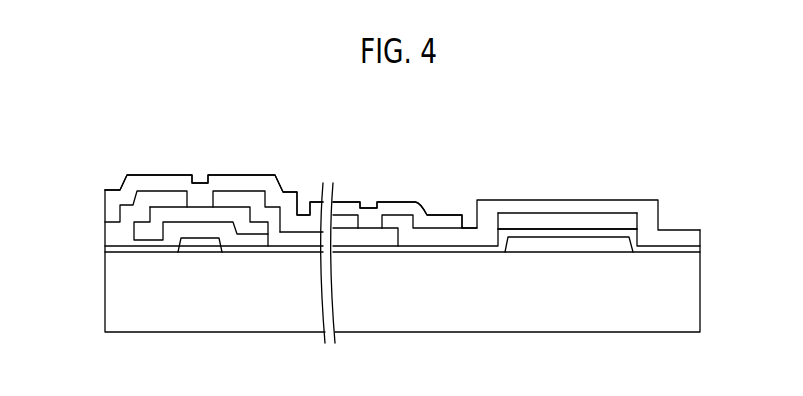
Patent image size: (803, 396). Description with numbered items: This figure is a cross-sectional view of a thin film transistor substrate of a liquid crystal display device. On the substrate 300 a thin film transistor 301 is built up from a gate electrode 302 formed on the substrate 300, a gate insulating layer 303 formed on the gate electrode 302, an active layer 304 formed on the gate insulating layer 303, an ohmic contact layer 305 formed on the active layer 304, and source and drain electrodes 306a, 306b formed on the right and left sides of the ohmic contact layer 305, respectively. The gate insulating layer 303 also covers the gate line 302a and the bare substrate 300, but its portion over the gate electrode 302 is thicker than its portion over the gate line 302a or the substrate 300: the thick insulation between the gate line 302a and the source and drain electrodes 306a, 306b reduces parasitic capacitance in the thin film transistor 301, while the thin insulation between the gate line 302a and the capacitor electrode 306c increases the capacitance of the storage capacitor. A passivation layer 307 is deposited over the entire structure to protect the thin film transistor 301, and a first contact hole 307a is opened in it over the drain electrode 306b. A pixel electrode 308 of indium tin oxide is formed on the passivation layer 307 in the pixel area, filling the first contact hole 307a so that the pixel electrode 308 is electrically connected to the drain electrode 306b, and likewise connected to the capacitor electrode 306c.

The substrate 300 is at (112, 288).
The thin film transistor 301 is at (328, 135).
The gate electrode 302 is at (206, 250).
The gate line 302a is at (578, 243).
The gate insulating layer 303 is at (107, 249).
The active layer 304 is at (235, 213).
The ohmic contact layer 305 is at (251, 207).
The source electrode 306a is at (165, 196).
The drain electrode 306b is at (297, 246).
The capacitor electrode 306c is at (607, 217).
The passivation layer 307 is at (108, 200).
The first contact hole 307a is at (368, 201).
The pixel electrode 308 is at (427, 214).